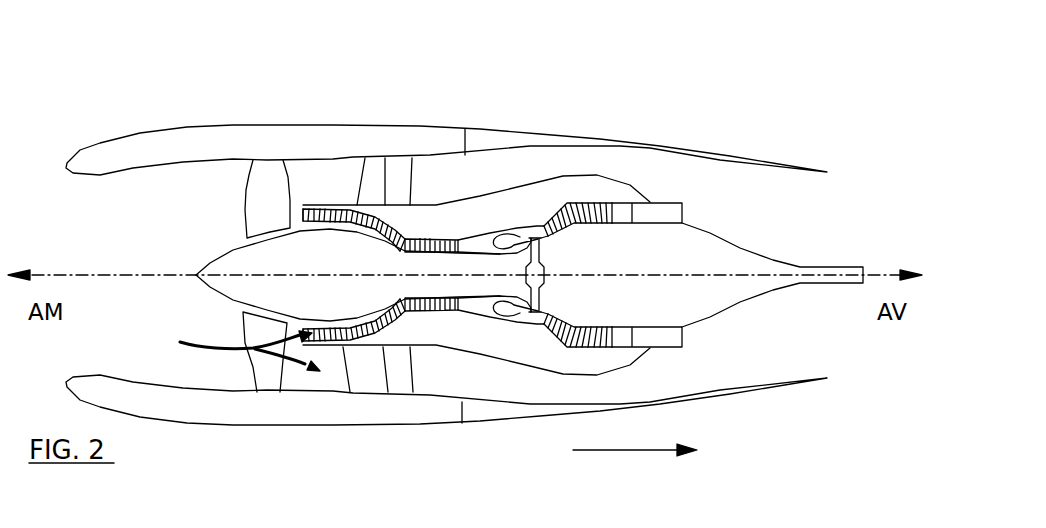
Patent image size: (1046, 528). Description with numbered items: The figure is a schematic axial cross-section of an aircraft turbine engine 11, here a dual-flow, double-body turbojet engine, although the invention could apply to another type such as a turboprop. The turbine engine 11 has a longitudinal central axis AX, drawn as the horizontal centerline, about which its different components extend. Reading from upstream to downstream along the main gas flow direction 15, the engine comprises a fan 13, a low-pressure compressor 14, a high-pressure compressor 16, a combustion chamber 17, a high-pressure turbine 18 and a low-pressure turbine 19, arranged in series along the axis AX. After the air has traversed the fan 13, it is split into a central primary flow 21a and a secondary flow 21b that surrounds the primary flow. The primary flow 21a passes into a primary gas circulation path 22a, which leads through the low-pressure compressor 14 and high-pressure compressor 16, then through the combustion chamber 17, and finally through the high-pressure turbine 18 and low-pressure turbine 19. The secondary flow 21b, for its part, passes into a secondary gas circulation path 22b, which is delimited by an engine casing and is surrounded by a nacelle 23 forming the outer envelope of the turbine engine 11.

The aircraft turbine engine 11 is at (147, 69).
The fan 13 is at (273, 180).
The low-pressure compressor 14 is at (349, 196).
The main gas flow direction 15 is at (635, 465).
The high-pressure compressor 16 is at (431, 226).
The combustion chamber 17 is at (505, 237).
The high-pressure turbine 18 is at (557, 198).
The low-pressure turbine 19 is at (620, 186).
The primary flow 21a is at (285, 357).
The secondary flow 21b is at (288, 335).
The primary gas circulation path 22a is at (406, 326).
The secondary gas circulation path 22b is at (438, 390).
The nacelle 23 is at (305, 407).
The longitudinal central axis AX is at (762, 280).